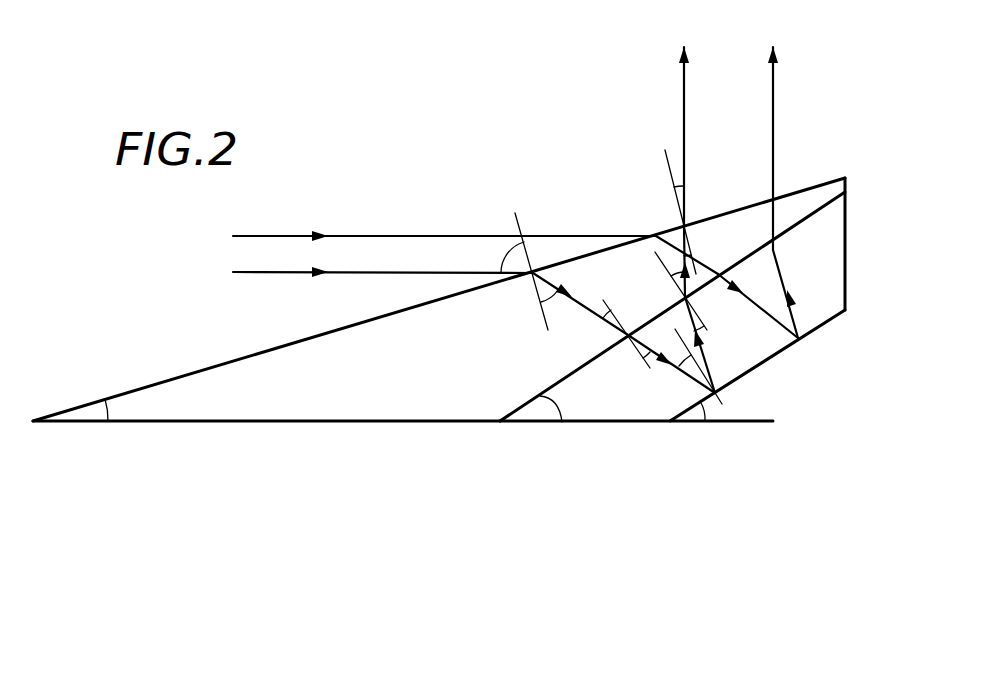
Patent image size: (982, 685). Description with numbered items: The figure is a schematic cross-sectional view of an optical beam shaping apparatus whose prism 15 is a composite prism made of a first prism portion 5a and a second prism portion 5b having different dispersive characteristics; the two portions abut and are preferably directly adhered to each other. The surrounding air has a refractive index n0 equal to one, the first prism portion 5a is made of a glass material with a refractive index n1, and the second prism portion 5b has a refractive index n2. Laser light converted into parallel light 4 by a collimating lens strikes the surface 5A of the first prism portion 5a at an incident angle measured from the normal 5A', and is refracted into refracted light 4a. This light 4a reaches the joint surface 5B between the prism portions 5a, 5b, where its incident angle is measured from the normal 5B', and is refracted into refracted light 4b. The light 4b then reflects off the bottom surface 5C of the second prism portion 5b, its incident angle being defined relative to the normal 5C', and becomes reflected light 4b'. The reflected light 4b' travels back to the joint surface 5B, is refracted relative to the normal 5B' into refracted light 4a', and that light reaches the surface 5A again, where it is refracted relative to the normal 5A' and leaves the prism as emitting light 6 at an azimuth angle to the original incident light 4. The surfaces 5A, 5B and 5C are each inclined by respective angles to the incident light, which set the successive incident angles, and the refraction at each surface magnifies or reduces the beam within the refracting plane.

The parallel light 4 is at (238, 270).
The refracted light 4a is at (580, 322).
The refracted light 4a' is at (656, 217).
The refracted light 4b is at (671, 406).
The reflected light 4b' is at (749, 328).
The surface 5A is at (437, 299).
The normal 5A' is at (579, 216).
The joint surface 5B is at (623, 338).
The normal 5B' is at (623, 275).
The bottom surface 5C is at (781, 365).
The normal 5C' is at (739, 406).
The first prism portion 5a is at (268, 388).
The second prism portion 5b is at (590, 410).
The emitting light 6 is at (686, 88).
The prism 15 is at (470, 510).
The refractive index of air n0 is at (118, 343).
The refractive index n1 is at (350, 379).
The refractive index n2 is at (615, 384).